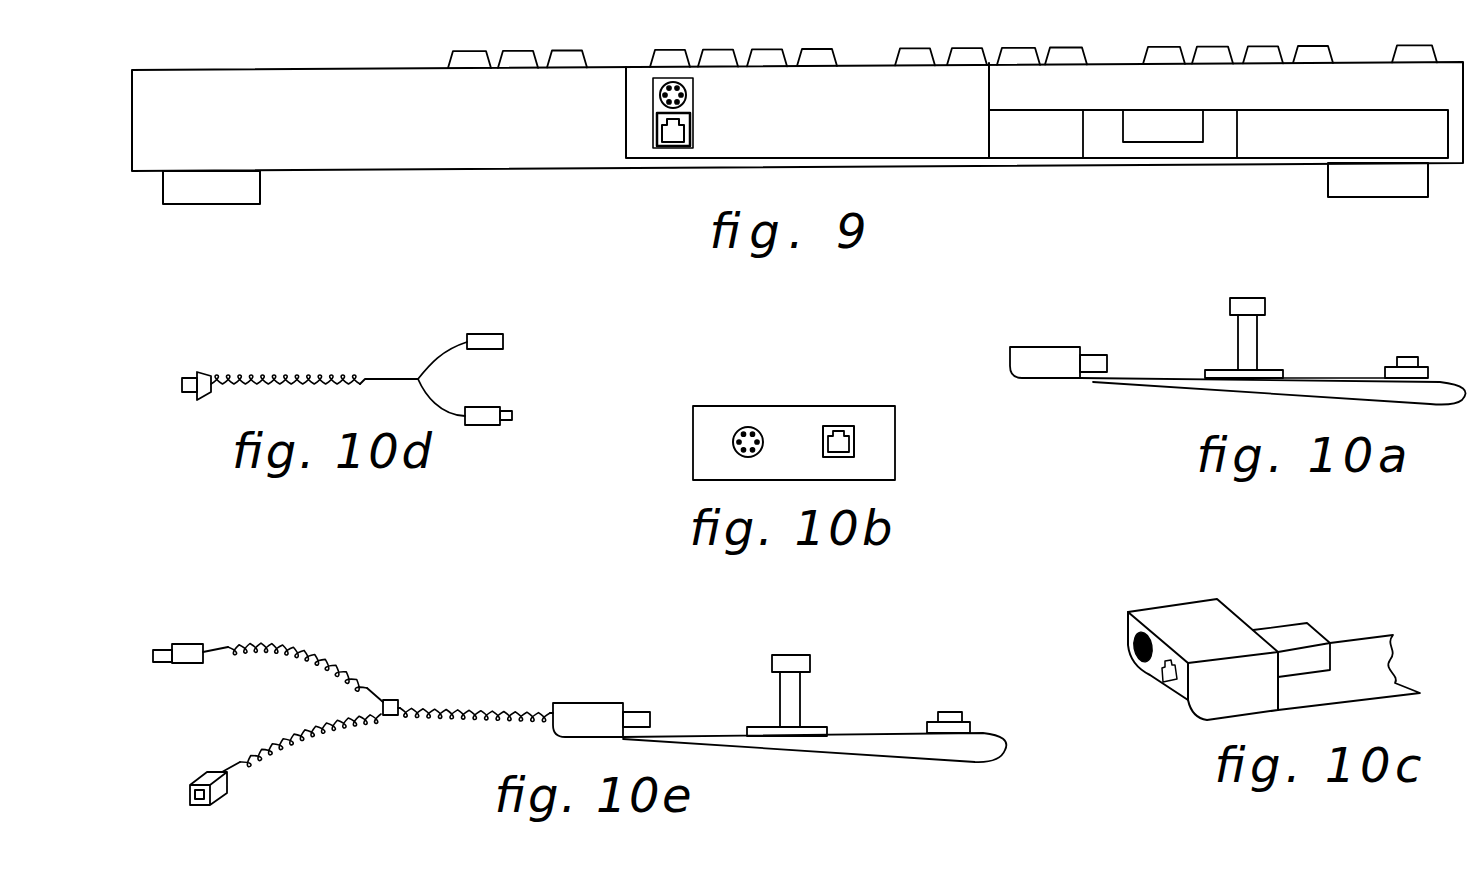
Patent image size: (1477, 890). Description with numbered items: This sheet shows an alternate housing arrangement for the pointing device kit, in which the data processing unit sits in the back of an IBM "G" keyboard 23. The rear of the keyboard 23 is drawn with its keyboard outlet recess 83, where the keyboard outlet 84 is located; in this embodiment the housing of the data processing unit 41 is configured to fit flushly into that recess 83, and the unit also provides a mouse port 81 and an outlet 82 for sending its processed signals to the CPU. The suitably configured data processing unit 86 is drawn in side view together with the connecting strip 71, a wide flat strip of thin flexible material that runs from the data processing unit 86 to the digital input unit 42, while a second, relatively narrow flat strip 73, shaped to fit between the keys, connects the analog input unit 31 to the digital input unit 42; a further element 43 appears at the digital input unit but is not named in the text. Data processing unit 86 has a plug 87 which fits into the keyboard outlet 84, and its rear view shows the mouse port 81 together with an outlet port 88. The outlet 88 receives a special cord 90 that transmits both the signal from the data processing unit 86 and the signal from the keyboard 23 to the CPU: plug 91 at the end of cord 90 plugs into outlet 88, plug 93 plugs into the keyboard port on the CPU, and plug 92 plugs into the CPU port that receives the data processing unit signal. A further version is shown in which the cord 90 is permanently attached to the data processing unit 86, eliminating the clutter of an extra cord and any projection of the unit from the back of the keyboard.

In FIG. 9, the keyboard 23 is at (1358, 73).
In FIG. 10A, the analog input unit 31 is at (1257, 347).
In FIG. 9, the data processing unit 41 is at (898, 143).
In FIG. 10A, the digital input unit 42 is at (1388, 367).
In FIG. 10A, the key button 43 is at (1410, 357).
In FIG. 10A, the strip 71 is at (1138, 385).
In FIG. 10C, the strip 71 is at (1382, 643).
In FIG. 10A, the second strip 73 is at (1343, 378).
In FIG. 9, the mouse port 81 is at (653, 93).
In FIG. 10B, the mouse port 81 is at (733, 442).
In FIG. 9, the outlet 82 is at (655, 150).
In FIG. 9, the keyboard outlet recess 83 is at (1220, 147).
In FIG. 9, the keyboard outlet 84 is at (1153, 125).
In FIG. 10B, the data processing unit 86 is at (792, 406).
In FIG. 10A, the data processing unit 86 is at (1010, 378).
In FIG. 10E, the data processing unit 86 is at (598, 703).
In FIG. 10C, the data processing unit 86 is at (1153, 672).
In FIG. 10A, the plug 87 is at (1105, 355).
In FIG. 10C, the plug 87 is at (1290, 633).
In FIG. 10B, the outlet port 88 is at (847, 426).
In FIG. 10D, the cord 90 is at (380, 379).
In FIG. 10E, the cord 90 is at (490, 705).
In FIG. 10D, the plug 91 is at (207, 375).
In FIG. 10D, the plug 92 is at (485, 334).
In FIG. 10E, the plug 92 is at (227, 793).
In FIG. 10D, the plug 93 is at (480, 407).
In FIG. 10E, the plug 93 is at (183, 644).